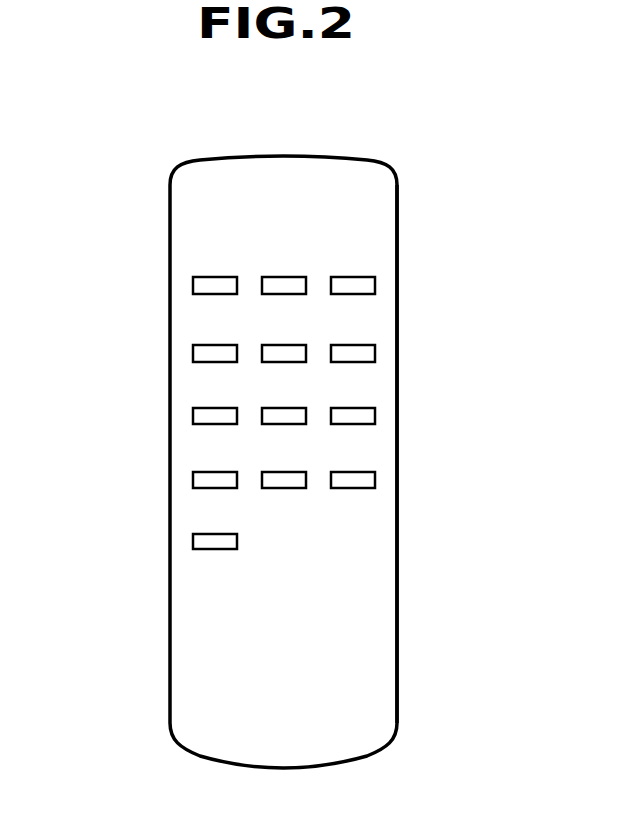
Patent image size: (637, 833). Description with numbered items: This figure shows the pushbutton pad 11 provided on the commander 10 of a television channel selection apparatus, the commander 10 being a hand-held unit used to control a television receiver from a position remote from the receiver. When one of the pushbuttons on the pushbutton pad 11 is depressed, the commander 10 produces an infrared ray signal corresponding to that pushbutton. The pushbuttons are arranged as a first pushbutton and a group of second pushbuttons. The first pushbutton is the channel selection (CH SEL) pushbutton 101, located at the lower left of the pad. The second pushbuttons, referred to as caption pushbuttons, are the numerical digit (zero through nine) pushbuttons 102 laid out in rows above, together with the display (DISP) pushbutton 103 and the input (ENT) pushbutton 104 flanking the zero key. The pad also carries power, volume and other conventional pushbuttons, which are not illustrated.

The commander 10 is at (380, 131).
The pushbutton pad 11 is at (397, 212).
The channel selection (CH SEL) pushbutton 101 is at (213, 549).
The numerical digit (0–9) pushbuttons 102 is at (193, 285).
The display (DISP) pushbutton 103 is at (193, 482).
The input (ENT) pushbutton 104 is at (350, 488).